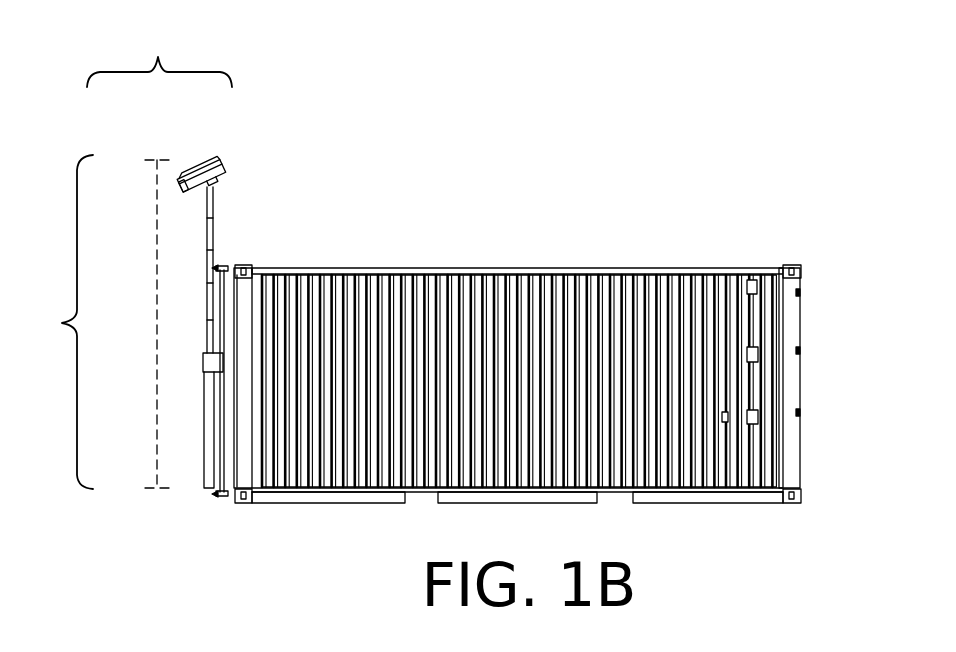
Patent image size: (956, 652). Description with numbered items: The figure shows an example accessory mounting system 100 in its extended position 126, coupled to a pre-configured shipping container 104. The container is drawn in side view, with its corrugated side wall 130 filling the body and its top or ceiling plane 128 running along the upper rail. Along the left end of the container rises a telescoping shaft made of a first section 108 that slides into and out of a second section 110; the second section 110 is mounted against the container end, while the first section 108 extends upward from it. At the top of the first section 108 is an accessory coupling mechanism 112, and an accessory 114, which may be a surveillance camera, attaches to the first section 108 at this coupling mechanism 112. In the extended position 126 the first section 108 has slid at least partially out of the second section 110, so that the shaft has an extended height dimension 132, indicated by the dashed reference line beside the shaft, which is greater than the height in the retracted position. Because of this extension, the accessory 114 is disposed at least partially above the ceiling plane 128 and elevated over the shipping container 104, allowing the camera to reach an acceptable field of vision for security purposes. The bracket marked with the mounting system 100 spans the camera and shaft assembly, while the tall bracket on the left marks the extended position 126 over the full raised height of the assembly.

The accessory mounting system 100 is at (159, 55).
The pre-configured shipping container 104 is at (517, 396).
The first section 108 is at (212, 212).
The second section 110 is at (217, 267).
The accessory coupling mechanism 112 is at (217, 178).
The accessory 114 is at (212, 164).
The extended position 126 is at (52, 322).
The ceiling plane 128 is at (600, 268).
The side wall 130 is at (279, 373).
The extended height dimension 132 is at (157, 260).